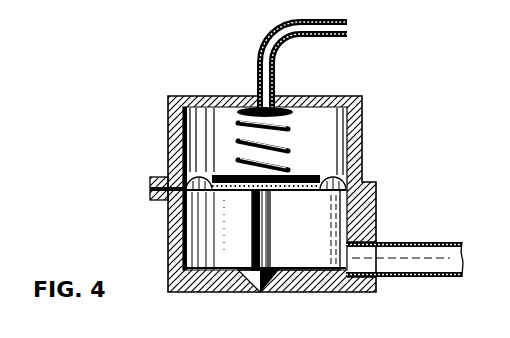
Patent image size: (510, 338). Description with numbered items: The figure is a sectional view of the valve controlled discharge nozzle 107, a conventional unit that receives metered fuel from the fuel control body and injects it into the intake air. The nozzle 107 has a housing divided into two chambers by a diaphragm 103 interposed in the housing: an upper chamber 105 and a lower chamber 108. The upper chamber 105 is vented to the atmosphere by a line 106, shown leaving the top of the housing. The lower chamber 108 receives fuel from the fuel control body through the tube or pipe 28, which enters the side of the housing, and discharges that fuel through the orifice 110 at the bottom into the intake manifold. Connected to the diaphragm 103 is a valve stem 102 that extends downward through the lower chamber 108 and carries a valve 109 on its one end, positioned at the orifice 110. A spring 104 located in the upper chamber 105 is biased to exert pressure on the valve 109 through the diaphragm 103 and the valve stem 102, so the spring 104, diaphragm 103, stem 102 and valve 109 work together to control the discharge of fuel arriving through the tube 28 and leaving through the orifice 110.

The tube or pipe 28 is at (425, 243).
The valve stem 102 is at (271, 226).
The diaphragm 103 is at (169, 166).
The spring 104 is at (288, 148).
The upper chamber 105 is at (328, 156).
The line 106 is at (343, 37).
The valve controlled discharge nozzle 107 is at (140, 189).
The lower chamber 108 is at (317, 262).
The valve 109 is at (247, 292).
The orifice 110 is at (263, 291).